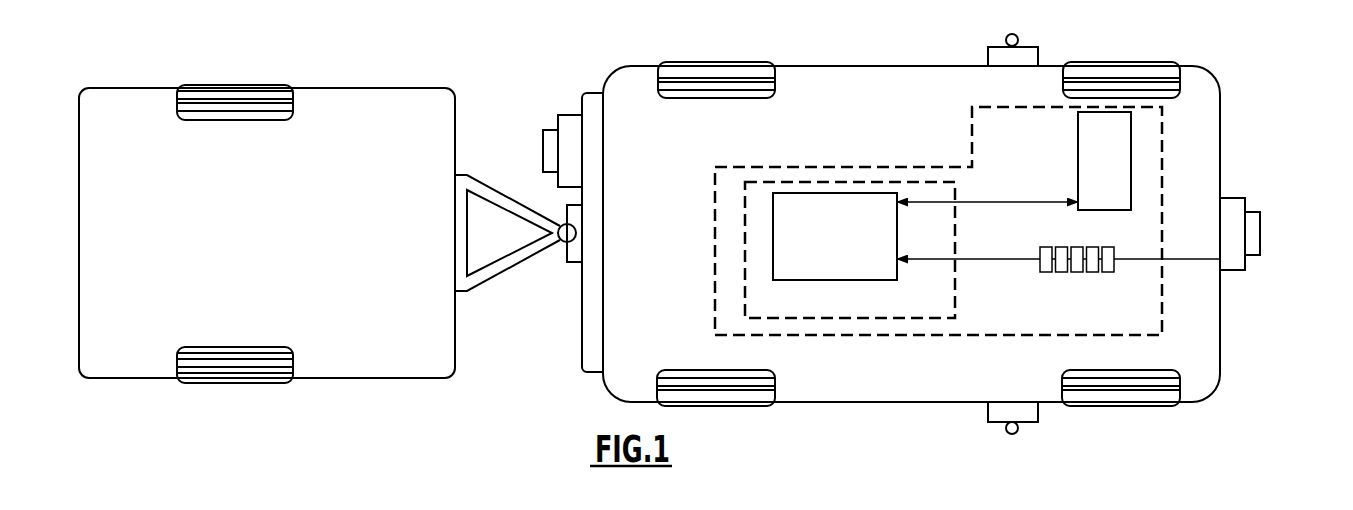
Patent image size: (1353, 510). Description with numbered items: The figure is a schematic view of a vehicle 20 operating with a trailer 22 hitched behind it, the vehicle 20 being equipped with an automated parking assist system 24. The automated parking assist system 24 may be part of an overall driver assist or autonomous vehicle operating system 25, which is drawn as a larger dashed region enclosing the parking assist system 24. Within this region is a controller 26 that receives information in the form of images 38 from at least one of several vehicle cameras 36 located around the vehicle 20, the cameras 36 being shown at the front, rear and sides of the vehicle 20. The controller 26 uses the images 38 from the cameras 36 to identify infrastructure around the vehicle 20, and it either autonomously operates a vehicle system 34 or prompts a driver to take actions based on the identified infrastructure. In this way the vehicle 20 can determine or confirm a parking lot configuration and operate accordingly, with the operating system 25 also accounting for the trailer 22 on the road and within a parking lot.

The vehicle 20 is at (917, 66).
The trailer 22 is at (260, 82).
The automated parking assist system 24 is at (865, 320).
The vehicle operating system 25 is at (960, 292).
The controller 26 is at (823, 282).
The vehicle system 34 is at (1078, 145).
The vehicle camera 36 is at (542, 123).
The images 38 is at (1062, 274).